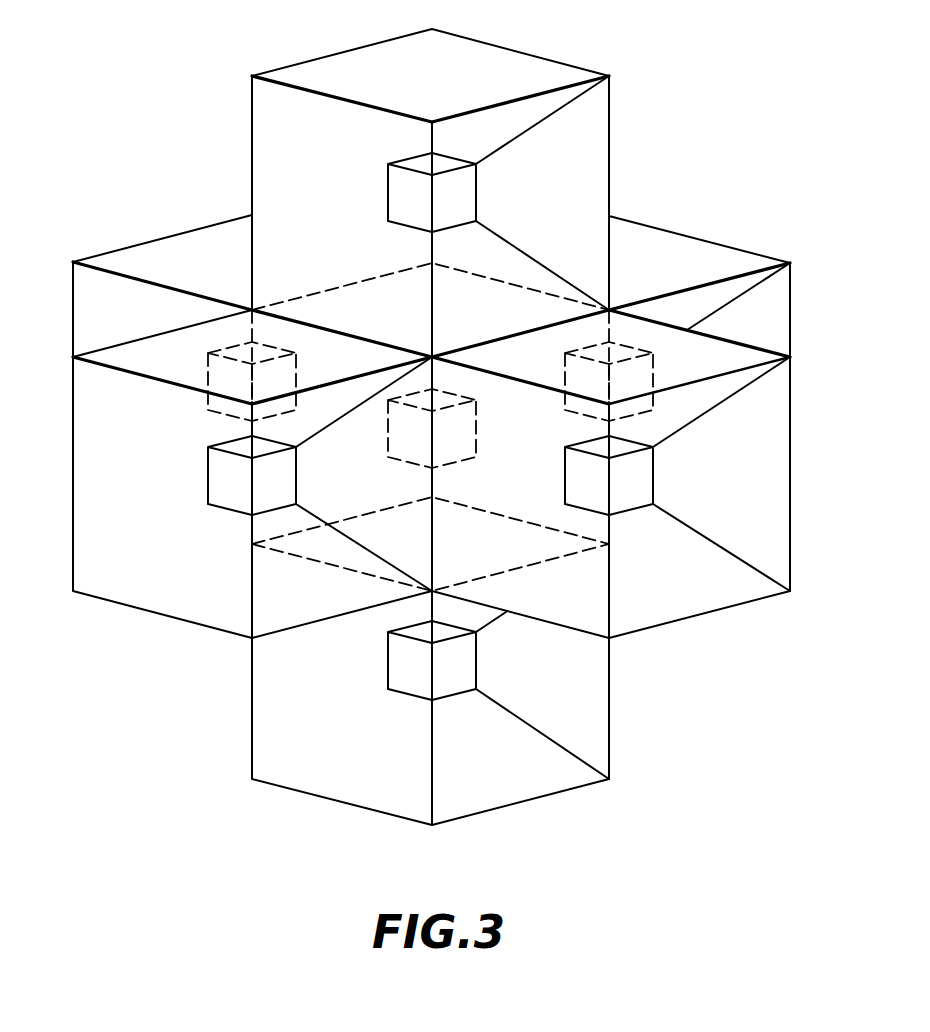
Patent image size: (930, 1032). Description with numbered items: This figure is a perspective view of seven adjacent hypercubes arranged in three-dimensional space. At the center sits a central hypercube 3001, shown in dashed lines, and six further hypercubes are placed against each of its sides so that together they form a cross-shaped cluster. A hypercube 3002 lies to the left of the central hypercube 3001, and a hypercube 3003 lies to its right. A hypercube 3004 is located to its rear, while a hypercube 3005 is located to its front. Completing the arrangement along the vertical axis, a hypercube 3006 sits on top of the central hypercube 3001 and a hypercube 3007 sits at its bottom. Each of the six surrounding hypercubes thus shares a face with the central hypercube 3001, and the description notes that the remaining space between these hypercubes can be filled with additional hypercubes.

The central hypercube 3001 is at (320, 543).
The hypercube 3002 is at (168, 580).
The hypercube 3003 is at (645, 248).
The hypercube 3004 is at (205, 250).
The hypercube 3005 is at (670, 577).
The hypercube 3006 is at (570, 155).
The hypercube 3007 is at (573, 698).